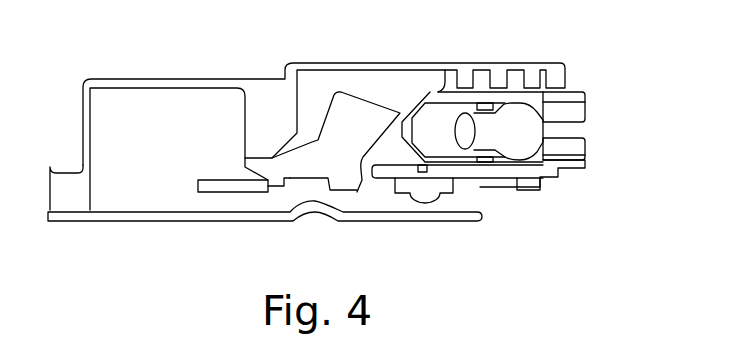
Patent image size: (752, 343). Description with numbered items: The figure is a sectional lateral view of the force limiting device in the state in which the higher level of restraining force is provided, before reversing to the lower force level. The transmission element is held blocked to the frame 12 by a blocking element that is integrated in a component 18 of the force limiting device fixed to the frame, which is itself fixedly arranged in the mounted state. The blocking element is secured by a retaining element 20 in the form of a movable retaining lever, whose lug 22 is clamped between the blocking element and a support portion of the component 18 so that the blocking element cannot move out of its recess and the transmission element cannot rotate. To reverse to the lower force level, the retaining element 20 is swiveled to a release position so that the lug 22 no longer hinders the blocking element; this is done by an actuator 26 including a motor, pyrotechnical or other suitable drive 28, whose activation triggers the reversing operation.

The frame 12 is at (463, 215).
The component fixed to the frame 18 is at (212, 187).
The retaining element 20 is at (350, 113).
The lug 22 is at (350, 177).
The actuator 26 is at (412, 108).
The drive 28 is at (513, 122).